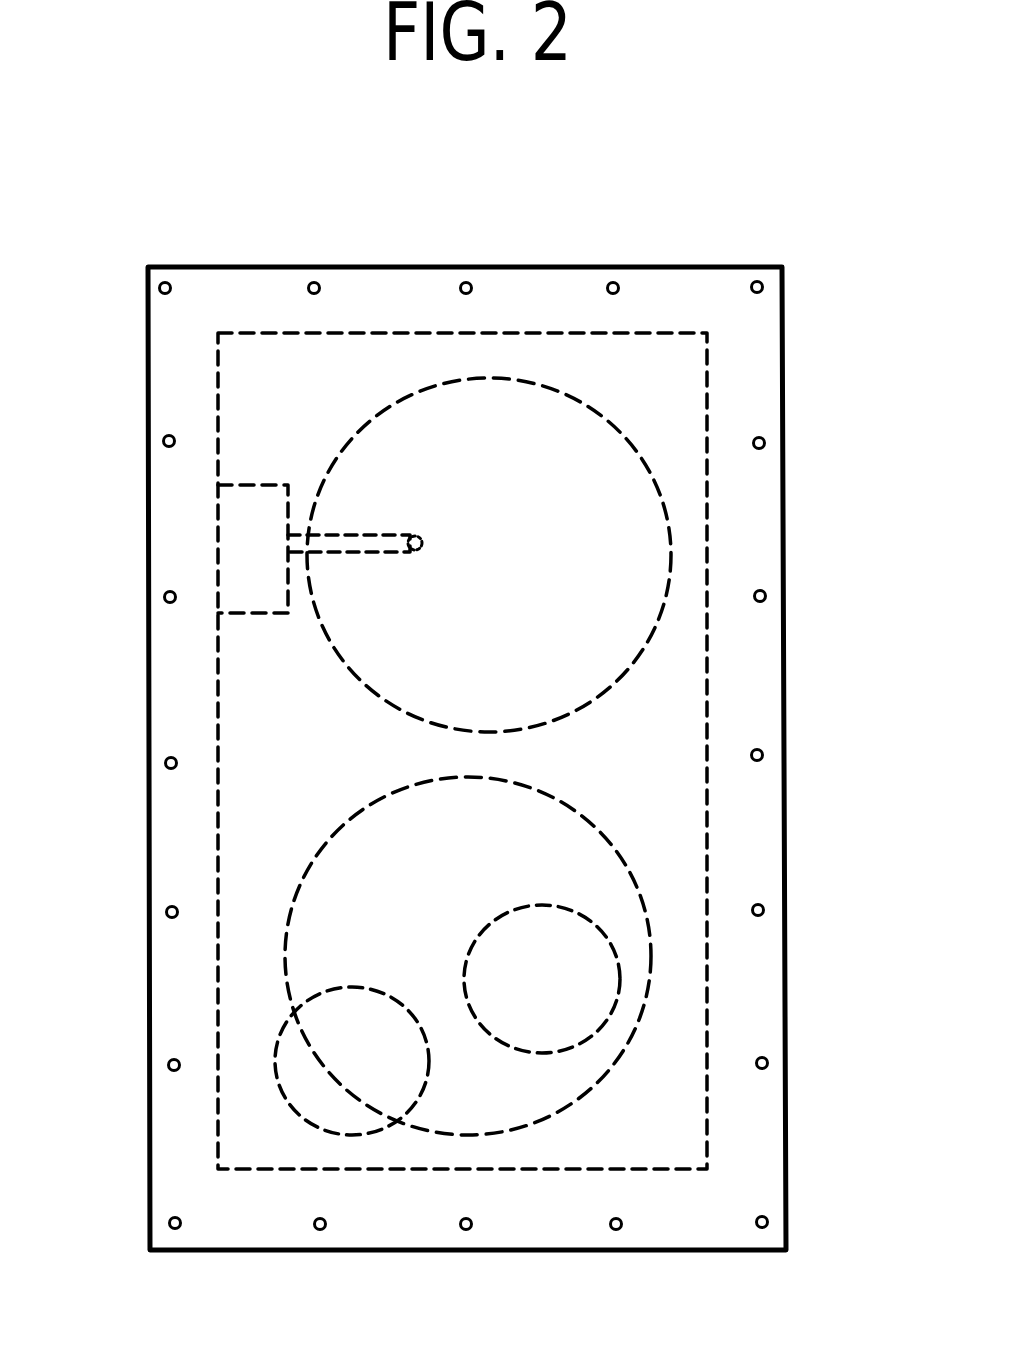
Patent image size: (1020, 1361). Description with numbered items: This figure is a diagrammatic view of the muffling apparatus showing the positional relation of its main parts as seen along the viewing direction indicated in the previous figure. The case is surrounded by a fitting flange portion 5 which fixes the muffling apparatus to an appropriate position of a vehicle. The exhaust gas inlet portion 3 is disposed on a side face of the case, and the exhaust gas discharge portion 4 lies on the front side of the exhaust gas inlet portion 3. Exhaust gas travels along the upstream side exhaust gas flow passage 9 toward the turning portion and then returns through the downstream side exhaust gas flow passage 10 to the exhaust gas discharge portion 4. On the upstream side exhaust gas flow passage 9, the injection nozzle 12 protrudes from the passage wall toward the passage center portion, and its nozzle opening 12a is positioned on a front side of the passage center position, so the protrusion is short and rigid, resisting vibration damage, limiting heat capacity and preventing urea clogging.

The exhaust gas inlet portion 3 is at (300, 1083).
The exhaust gas discharge portion 4 is at (604, 965).
The fitting flange portion 5 is at (783, 318).
The upstream side exhaust gas flow passage 9 is at (570, 561).
The downstream side exhaust gas flow passage 10 is at (498, 888).
The injection nozzle 12 is at (352, 556).
The nozzle opening 12a is at (412, 553).